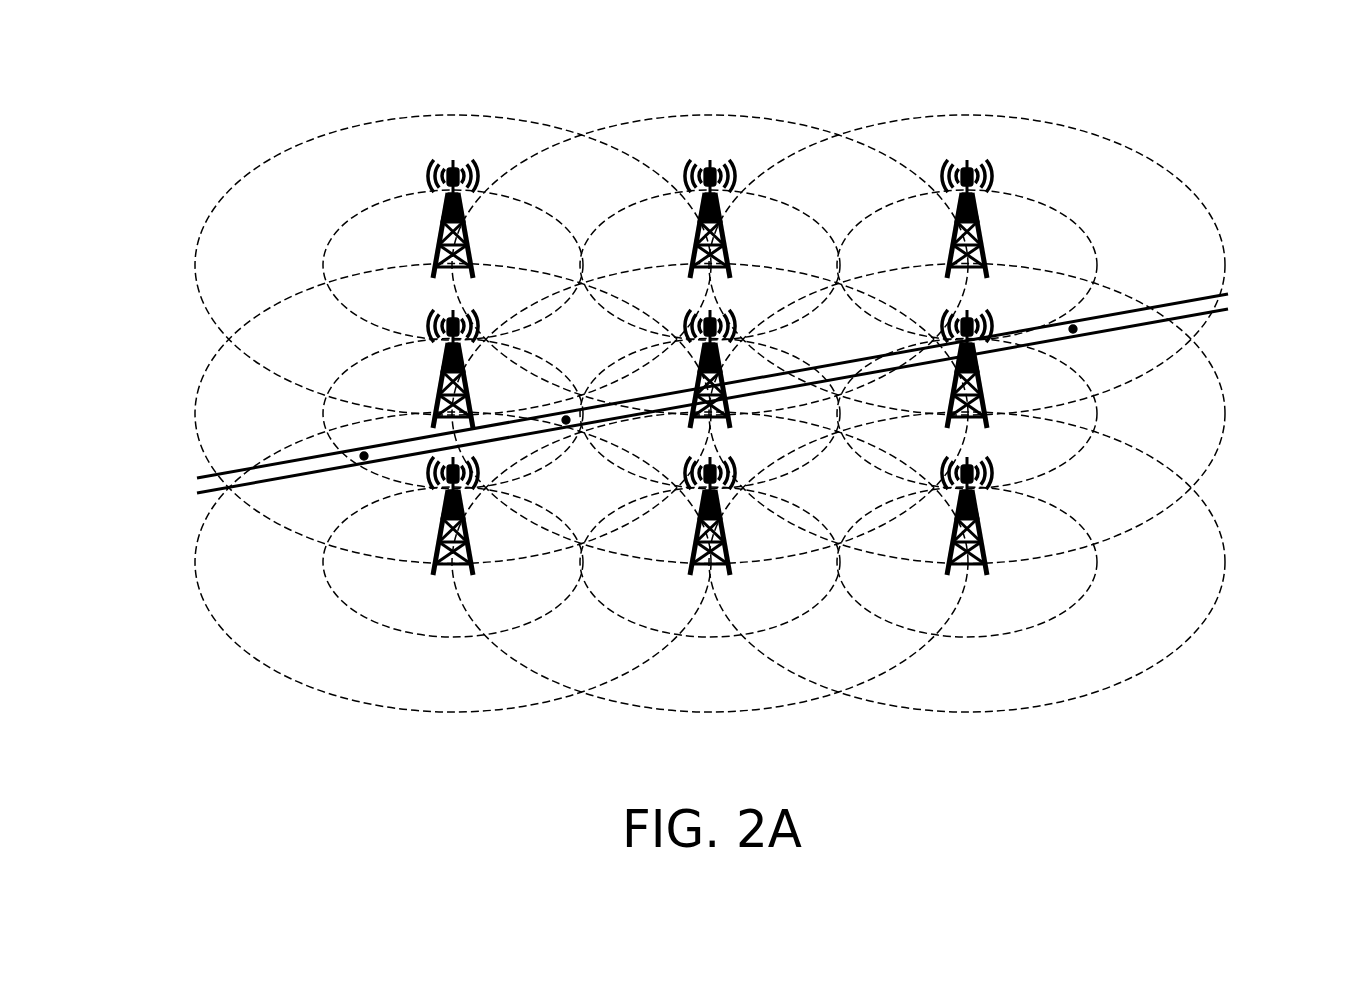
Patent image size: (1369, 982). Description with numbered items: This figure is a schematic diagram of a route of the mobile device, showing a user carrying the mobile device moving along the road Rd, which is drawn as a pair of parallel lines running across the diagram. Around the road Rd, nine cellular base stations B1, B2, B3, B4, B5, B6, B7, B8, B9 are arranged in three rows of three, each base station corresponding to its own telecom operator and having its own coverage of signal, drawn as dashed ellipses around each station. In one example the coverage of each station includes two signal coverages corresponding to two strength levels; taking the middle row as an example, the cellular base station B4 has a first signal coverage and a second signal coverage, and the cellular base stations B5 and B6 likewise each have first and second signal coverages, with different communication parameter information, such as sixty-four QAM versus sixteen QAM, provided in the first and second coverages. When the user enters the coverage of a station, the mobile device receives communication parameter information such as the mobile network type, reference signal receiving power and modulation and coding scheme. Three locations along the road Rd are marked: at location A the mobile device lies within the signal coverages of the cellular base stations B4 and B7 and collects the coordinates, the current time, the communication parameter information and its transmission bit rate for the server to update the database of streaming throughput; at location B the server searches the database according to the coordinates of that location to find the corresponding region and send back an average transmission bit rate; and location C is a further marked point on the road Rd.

The cellular base station B1 is at (437, 250).
The cellular base station B2 is at (695, 245).
The cellular base station B3 is at (950, 250).
The cellular base station B4 is at (437, 385).
The cellular base station B5 is at (697, 382).
The cellular base station B6 is at (950, 386).
The cellular base station B7 is at (440, 518).
The cellular base station B8 is at (697, 540).
The cellular base station B9 is at (955, 566).
The location A is at (364, 452).
The location B is at (566, 415).
The position C on the road C is at (1073, 325).
The road Rd is at (1176, 304).